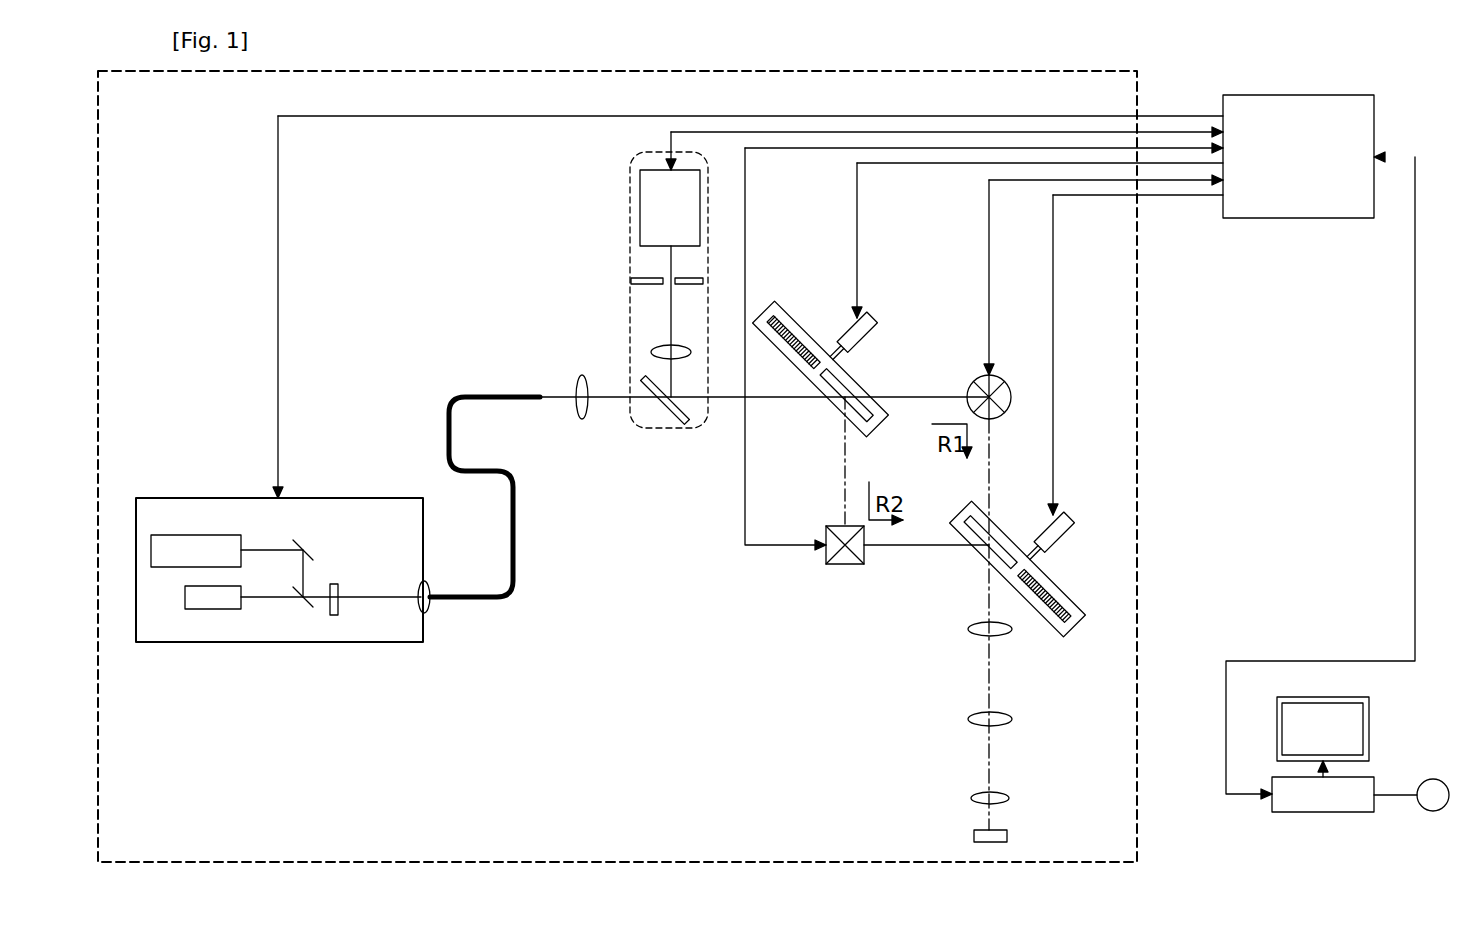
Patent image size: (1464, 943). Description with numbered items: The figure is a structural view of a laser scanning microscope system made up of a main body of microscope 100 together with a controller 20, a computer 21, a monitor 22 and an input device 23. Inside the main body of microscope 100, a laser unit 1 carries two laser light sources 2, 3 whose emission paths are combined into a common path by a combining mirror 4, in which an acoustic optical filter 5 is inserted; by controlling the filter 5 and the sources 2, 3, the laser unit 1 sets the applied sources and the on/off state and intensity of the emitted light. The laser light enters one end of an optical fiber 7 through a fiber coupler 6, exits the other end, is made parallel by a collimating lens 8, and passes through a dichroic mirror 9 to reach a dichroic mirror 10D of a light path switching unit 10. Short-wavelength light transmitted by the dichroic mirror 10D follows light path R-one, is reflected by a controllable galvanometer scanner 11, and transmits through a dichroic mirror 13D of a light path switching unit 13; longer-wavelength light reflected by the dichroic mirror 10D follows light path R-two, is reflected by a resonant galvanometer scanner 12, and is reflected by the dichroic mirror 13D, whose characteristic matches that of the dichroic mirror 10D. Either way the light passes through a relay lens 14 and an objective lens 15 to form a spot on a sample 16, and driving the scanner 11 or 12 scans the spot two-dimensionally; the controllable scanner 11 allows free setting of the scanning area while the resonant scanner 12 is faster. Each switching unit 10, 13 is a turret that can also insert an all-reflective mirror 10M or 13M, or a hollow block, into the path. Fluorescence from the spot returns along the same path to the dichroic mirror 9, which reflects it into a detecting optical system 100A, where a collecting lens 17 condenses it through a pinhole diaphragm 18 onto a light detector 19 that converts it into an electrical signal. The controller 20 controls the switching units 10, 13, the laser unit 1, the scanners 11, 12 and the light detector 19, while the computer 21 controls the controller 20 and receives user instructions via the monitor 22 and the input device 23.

The laser unit 1 is at (163, 498).
The laser light source 2 is at (221, 609).
The laser light source 3 is at (226, 535).
The combining mirror 4 is at (310, 543).
The acoustic optical filter (AOTF) 5 is at (338, 618).
The fiber coupler 6 is at (430, 608).
The optical fiber 7 is at (516, 548).
The collimating lens 8 is at (580, 377).
The dichroic mirror 9 is at (667, 410).
The light path switching unit 10 is at (826, 422).
The all-reflective mirror 10M is at (800, 335).
The dichroic mirror 10D is at (857, 377).
The controllable galvanometer scanner 11 is at (970, 383).
The resonant galvanometer scanner 12 is at (845, 567).
The light path switching unit 13 is at (962, 558).
The dichroic mirror 13D is at (992, 534).
The all-reflective mirror 13M is at (1062, 593).
The relay lens 14 is at (966, 617).
The objective lens 15 is at (972, 799).
The sample 16 is at (1005, 830).
The collecting lens 17 is at (655, 350).
The pinhole diaphragm 18 is at (631, 278).
The light detector 19 is at (640, 200).
The controller 20 is at (1335, 96).
The computer 21 is at (1320, 814).
The monitor 22 is at (1371, 733).
The input device 23 is at (1437, 779).
The main body of microscope 100 is at (1042, 72).
The detecting optical system 100A is at (636, 165).